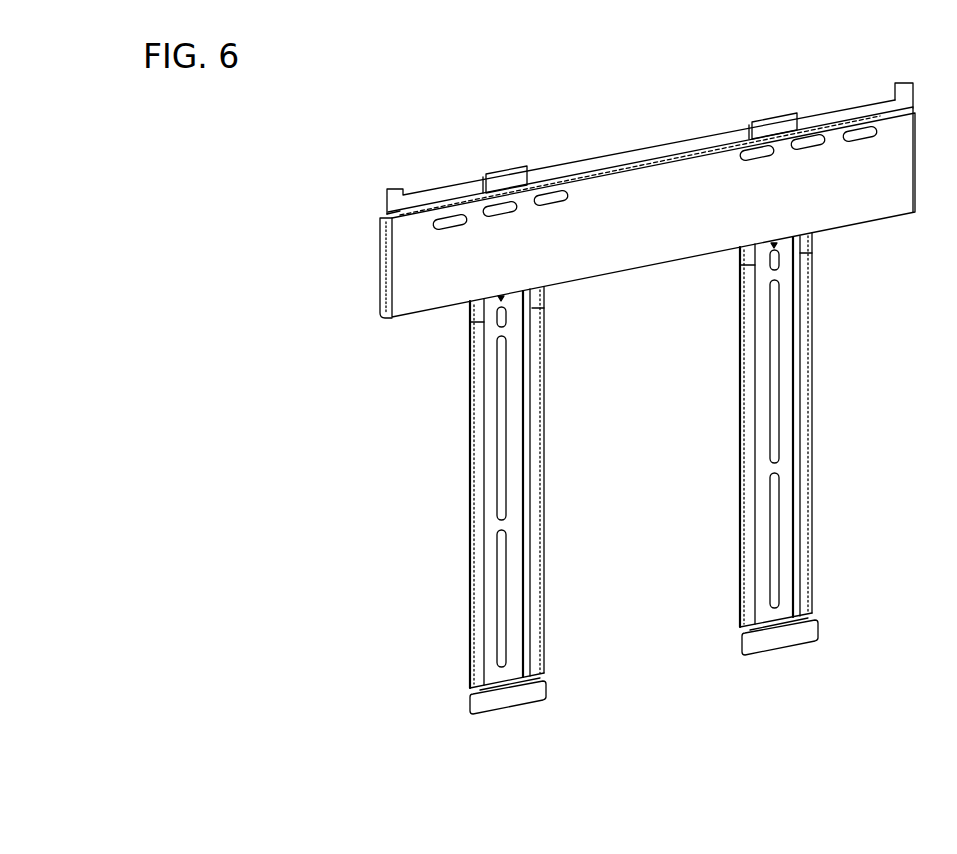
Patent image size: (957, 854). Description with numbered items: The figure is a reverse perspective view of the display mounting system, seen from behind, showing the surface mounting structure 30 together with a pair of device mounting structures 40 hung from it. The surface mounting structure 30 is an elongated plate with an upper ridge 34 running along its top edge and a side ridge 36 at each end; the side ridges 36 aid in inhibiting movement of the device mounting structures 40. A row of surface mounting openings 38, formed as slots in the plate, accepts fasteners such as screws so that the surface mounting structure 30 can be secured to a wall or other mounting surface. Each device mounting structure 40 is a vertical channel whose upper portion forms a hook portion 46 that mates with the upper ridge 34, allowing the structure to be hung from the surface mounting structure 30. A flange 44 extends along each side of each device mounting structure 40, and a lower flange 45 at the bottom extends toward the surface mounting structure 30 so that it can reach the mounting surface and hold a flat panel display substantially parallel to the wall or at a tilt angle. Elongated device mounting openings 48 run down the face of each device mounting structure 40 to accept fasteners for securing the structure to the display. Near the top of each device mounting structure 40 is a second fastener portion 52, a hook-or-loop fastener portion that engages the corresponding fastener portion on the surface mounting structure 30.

The surface mounting structure 30 is at (413, 252).
The upper ridge 34 is at (633, 153).
The side ridge 36 is at (378, 296).
The surface mounting opening 38 is at (858, 131).
The device mounting structure 40 is at (513, 447).
The flange 44 is at (470, 422).
The lower flange 45 is at (513, 697).
The hook portion 46 is at (520, 172).
The device mounting opening 48 is at (498, 313).
The second fastener portion 52 is at (470, 312).